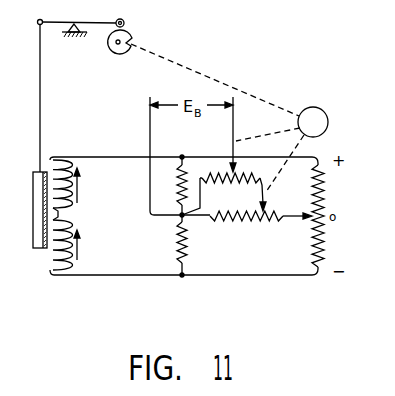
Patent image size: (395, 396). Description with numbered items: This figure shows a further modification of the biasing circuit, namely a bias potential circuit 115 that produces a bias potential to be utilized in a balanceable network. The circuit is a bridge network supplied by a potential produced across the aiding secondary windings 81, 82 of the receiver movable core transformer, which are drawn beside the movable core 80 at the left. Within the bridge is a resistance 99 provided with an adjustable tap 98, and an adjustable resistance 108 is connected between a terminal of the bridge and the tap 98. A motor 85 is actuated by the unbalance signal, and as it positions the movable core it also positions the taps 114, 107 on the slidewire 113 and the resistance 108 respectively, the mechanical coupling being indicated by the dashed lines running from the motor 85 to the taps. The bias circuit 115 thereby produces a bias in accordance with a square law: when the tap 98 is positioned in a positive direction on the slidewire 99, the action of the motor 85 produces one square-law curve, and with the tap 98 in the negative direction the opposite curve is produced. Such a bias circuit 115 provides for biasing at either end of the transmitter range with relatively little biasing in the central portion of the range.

The armature bar 80 is at (32, 173).
The secondary winding 81 is at (68, 203).
The secondary winding 82 is at (67, 230).
The motor 85 is at (328, 117).
The adjustable tap 98 is at (288, 220).
The resistance 99 is at (324, 192).
The tap 107 is at (267, 200).
The adjustable resistance 108 is at (260, 219).
The slidewire 113 is at (230, 188).
The tap 114 is at (233, 142).
The bias potential circuit 115 is at (254, 271).